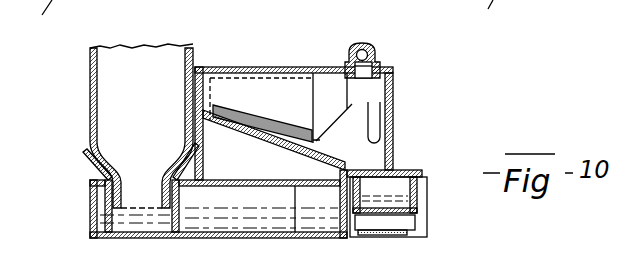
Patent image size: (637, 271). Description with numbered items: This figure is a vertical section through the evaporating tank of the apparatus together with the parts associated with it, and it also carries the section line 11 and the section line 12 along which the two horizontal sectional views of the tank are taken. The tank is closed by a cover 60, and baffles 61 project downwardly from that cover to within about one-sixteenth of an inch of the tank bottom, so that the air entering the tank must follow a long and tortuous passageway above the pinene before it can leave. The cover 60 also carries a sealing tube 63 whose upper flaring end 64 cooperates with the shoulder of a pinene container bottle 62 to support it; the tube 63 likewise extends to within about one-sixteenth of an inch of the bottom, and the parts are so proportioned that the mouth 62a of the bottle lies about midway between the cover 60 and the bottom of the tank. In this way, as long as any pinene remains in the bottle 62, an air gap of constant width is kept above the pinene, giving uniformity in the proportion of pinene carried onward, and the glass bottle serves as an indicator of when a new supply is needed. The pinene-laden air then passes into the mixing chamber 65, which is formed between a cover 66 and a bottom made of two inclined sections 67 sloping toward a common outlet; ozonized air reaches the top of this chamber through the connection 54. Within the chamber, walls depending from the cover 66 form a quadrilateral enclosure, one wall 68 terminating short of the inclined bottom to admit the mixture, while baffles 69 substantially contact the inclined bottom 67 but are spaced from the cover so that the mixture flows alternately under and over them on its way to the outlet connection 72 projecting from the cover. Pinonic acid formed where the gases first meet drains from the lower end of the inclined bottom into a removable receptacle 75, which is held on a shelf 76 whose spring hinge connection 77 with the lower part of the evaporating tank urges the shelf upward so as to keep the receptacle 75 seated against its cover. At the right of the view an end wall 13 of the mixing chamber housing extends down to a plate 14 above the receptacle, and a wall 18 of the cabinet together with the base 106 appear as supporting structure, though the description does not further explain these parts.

The section line 11— 11 is at (448, 113).
The section line 12— 12 is at (466, 191).
The housing end wall 13 is at (390, 163).
The support plate 14 is at (405, 172).
The wall 18 is at (428, 180).
The connection 54 is at (365, 45).
The cover 60 is at (237, 180).
The baffles 61 is at (313, 197).
The pinene container bottle 62 is at (141, 126).
The mouth 62a is at (133, 210).
The sealing tube 63 is at (106, 213).
The upper flaring end 64 is at (84, 152).
The mixing chamber 65 is at (358, 94).
The cover 66 is at (278, 69).
The inclined bottom sections 67 is at (343, 154).
The wall 68 is at (284, 108).
The baffles 69 is at (242, 122).
The outlet connection 72 is at (380, 65).
The receptacle 75 is at (408, 199).
The shelf 76 is at (416, 223).
The spring hinge connection 77 is at (377, 236).
The base 106 is at (413, 264).